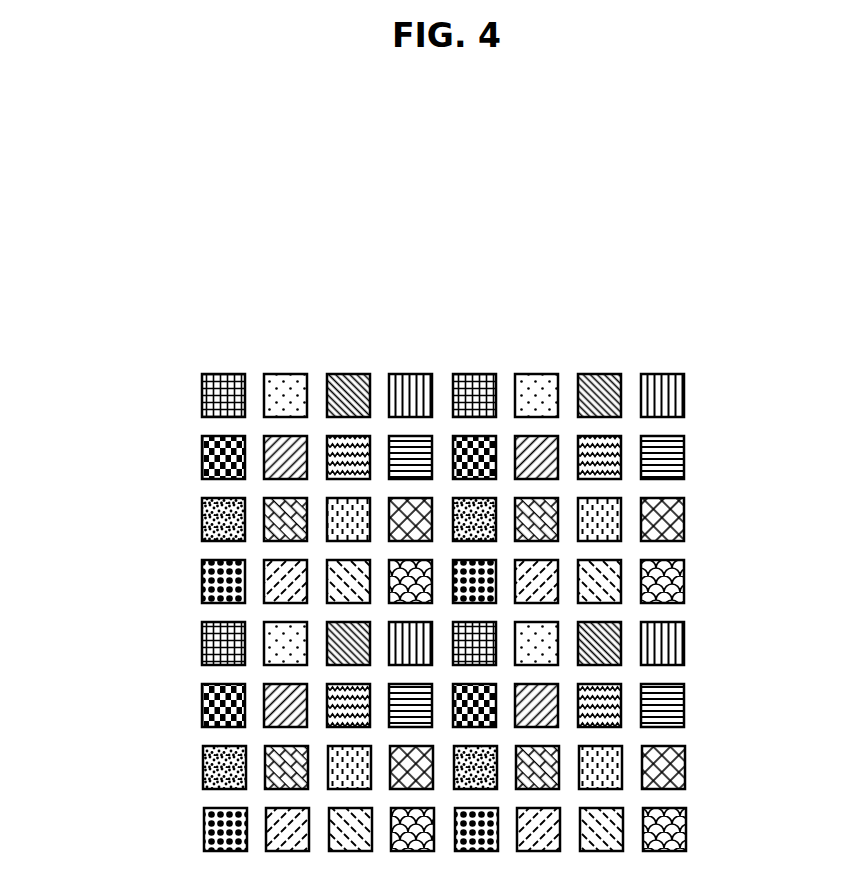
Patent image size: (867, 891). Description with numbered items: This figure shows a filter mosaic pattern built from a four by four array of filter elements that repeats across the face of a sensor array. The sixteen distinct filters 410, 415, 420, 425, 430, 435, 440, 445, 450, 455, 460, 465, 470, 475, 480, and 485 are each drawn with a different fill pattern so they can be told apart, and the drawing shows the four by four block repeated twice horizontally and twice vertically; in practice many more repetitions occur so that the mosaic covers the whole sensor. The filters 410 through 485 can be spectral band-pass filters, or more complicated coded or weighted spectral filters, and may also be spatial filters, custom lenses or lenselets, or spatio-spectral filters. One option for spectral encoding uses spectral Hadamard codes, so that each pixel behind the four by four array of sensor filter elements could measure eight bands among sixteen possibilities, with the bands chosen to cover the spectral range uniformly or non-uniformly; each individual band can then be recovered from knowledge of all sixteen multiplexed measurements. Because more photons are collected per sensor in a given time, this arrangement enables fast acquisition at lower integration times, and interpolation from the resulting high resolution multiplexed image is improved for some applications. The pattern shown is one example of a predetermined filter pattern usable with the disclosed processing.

The filter 410 is at (200, 394).
The filter 415 is at (200, 457).
The filter 420 is at (200, 517).
The filter 425 is at (200, 580).
The filter 430 is at (285, 374).
The filter 435 is at (262, 458).
The filter 440 is at (262, 520).
The filter 445 is at (262, 583).
The filter 450 is at (348, 374).
The filter 455 is at (322, 457).
The filter 460 is at (348, 544).
The filter 465 is at (350, 606).
The filter 470 is at (412, 374).
The filter 475 is at (387, 457).
The filter 480 is at (437, 520).
The filter 485 is at (410, 605).